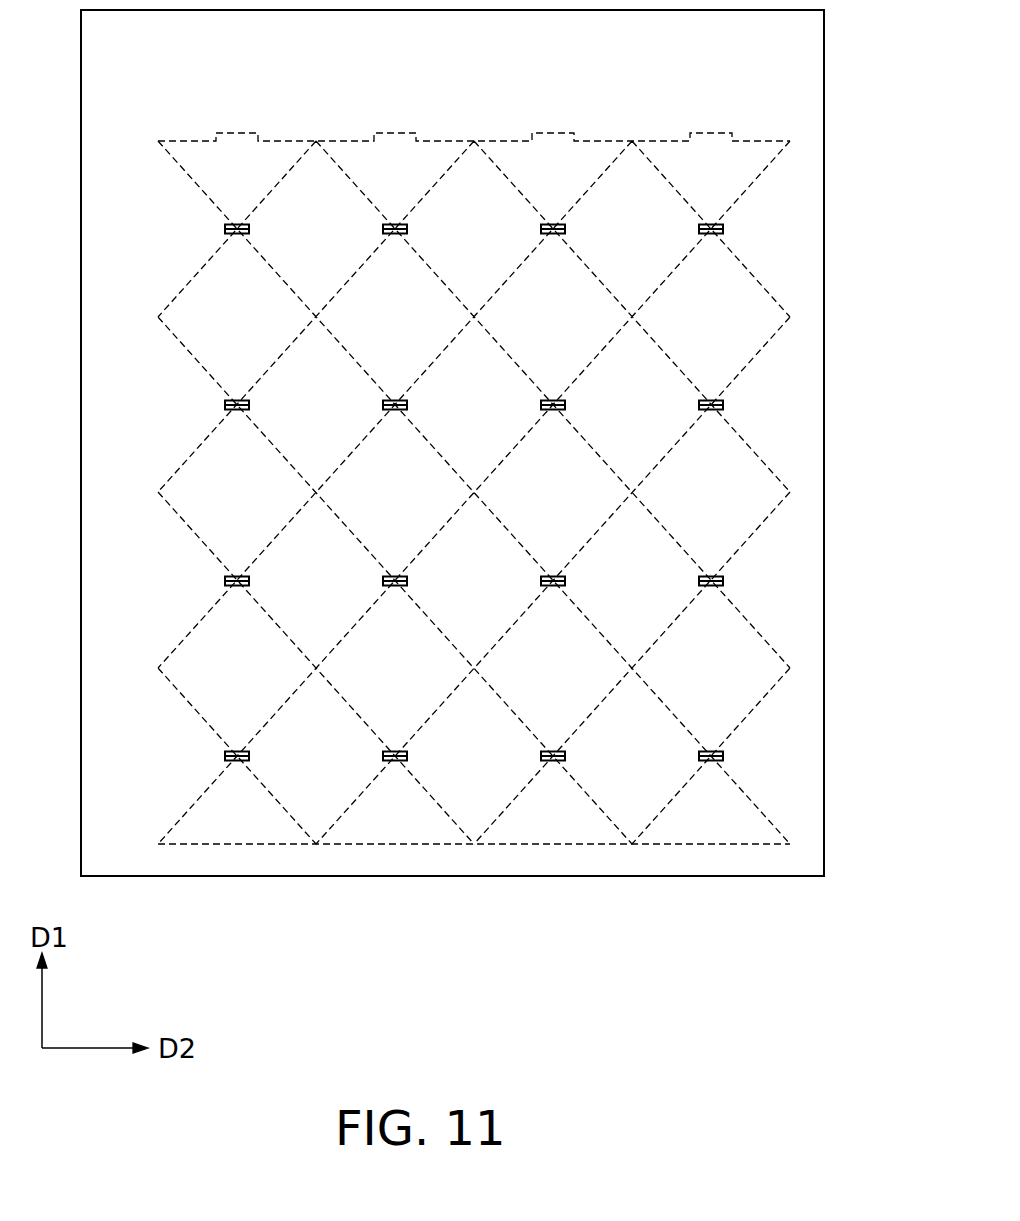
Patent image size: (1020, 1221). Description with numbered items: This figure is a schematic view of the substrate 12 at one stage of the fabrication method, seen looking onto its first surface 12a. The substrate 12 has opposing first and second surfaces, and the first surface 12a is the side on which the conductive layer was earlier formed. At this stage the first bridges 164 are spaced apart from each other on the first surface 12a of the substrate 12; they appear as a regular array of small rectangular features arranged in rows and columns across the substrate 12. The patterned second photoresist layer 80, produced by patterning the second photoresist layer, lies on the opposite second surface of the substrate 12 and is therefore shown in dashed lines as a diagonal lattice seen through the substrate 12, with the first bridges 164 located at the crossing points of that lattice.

The substrate 12 is at (786, 760).
The first surface 12a is at (789, 90).
The patterned second photoresist layer 80 is at (757, 180).
The first bridges 164 is at (726, 403).